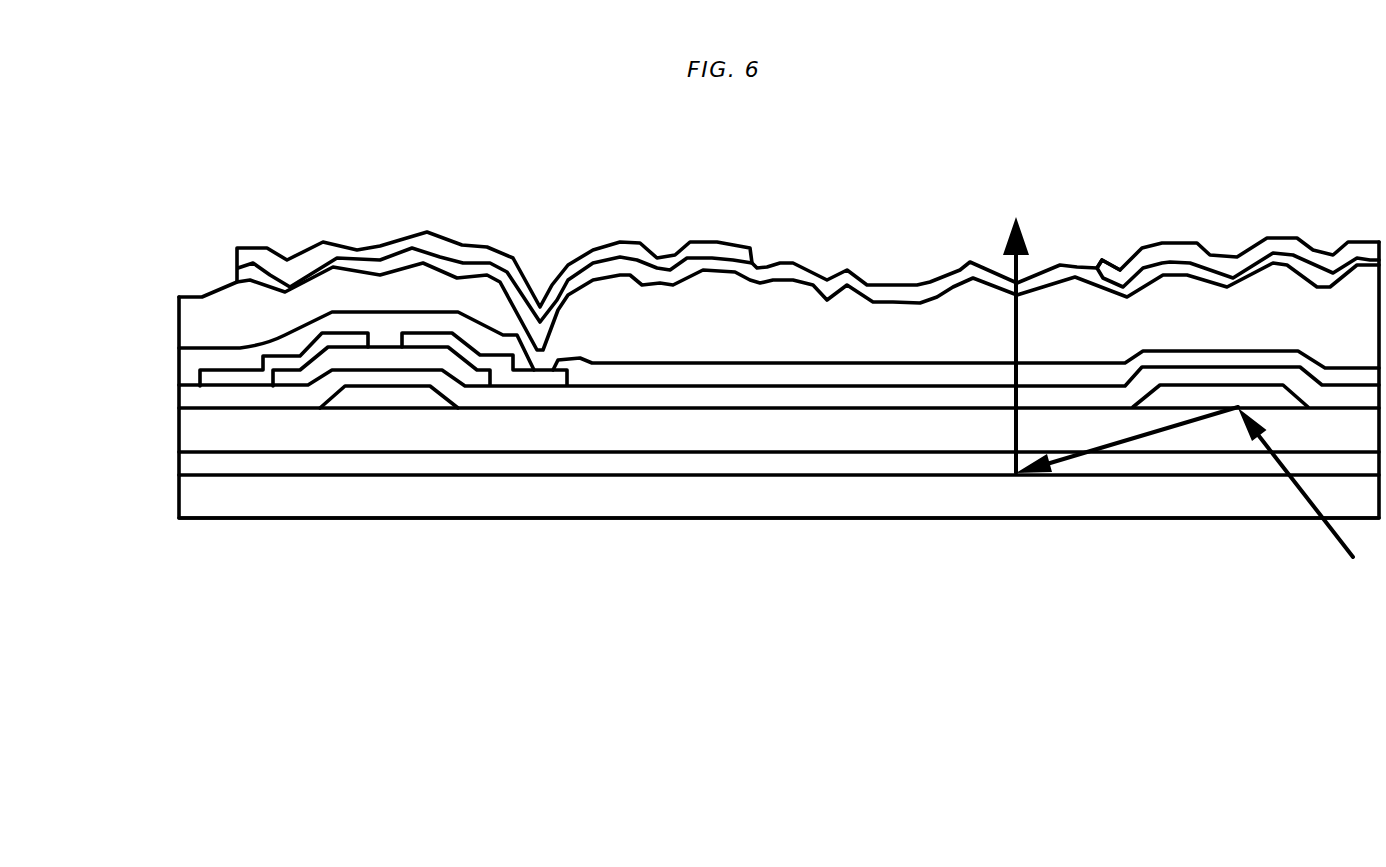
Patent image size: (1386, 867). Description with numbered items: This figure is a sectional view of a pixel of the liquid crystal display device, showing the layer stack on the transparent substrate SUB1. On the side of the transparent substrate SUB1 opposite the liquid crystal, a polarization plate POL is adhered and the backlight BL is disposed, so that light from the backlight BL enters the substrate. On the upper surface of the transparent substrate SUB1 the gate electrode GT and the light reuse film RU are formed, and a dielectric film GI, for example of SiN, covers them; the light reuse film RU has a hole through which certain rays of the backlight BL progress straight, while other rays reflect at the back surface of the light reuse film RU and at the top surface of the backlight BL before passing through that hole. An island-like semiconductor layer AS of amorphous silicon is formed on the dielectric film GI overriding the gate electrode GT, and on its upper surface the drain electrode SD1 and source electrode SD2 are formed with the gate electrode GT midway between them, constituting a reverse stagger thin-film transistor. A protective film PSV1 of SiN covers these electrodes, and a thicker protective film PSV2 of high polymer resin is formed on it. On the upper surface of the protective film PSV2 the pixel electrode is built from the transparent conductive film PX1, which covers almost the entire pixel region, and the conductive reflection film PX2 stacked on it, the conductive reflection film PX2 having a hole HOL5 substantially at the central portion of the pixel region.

The transparent substrate SUB1 is at (247, 433).
The polarization plate POL is at (598, 465).
The backlight BL is at (465, 508).
The gate electrode GT is at (362, 402).
The dielectric film GI is at (542, 397).
The semiconductor layer AS is at (393, 380).
The drain electrode SD1 is at (298, 360).
The source electrode SD2 is at (460, 348).
The protective film PSV1 is at (362, 320).
The protective film PSV2 is at (205, 312).
The transparent conductive film PX1 is at (920, 295).
The conductive reflection film PX2 is at (342, 262).
The hole HOL5 is at (1098, 267).
The light reuse film RU is at (1183, 398).